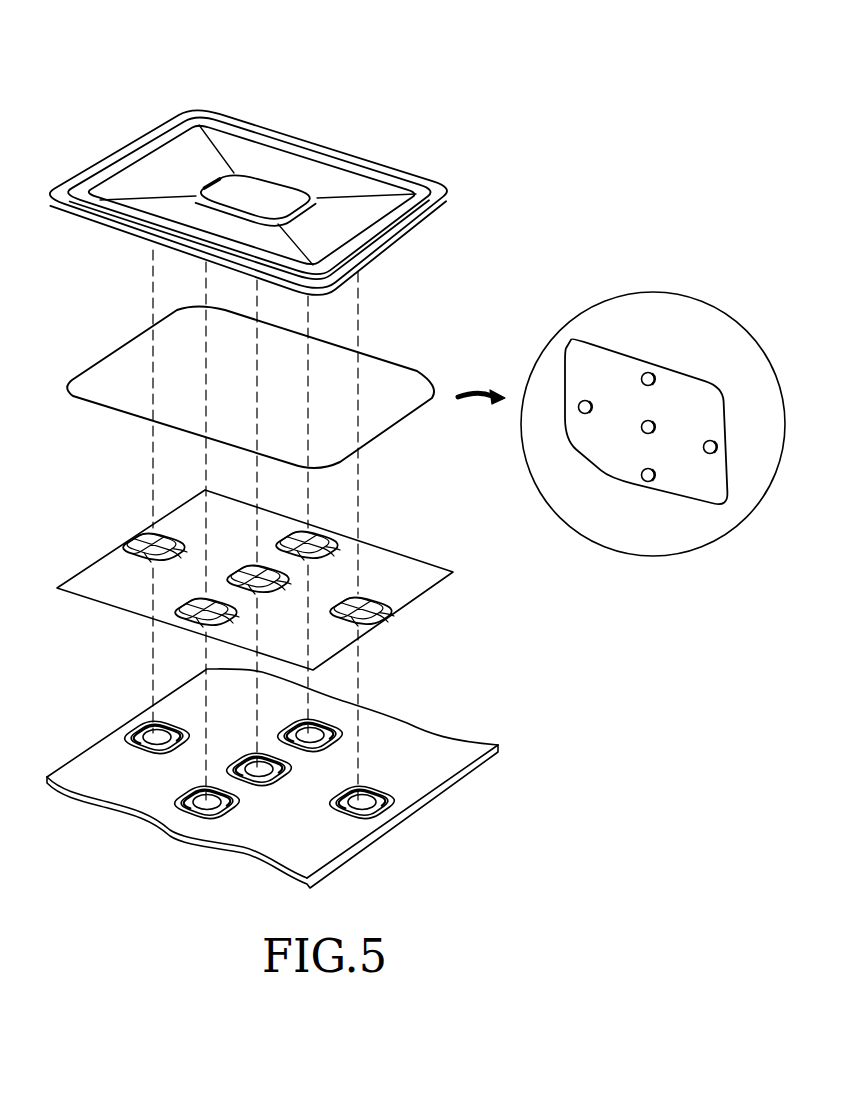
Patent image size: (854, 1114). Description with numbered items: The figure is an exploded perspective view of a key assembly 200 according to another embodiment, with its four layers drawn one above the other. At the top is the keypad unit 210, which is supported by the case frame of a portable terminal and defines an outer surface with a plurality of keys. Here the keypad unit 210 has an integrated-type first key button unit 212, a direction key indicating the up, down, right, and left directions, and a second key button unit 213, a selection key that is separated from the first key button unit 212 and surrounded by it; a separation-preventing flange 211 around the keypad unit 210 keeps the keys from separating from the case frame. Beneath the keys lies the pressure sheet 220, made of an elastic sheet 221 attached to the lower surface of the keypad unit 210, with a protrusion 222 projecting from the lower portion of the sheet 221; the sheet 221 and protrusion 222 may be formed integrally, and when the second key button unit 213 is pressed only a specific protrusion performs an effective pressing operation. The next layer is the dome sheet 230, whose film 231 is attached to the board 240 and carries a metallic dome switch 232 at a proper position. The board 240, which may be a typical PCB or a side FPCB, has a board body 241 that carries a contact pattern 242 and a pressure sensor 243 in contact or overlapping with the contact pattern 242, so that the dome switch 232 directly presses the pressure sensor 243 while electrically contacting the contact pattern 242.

The key assembly 200 is at (90, 77).
The keypad unit 210 is at (440, 152).
The separation-preventing flange 211 is at (447, 202).
The first key button unit 212 is at (183, 135).
The second key button unit 213 is at (240, 180).
The pressure sheet 220 is at (453, 352).
The sheet 221 is at (377, 363).
The protrusion 222 is at (648, 372).
The dome sheet 230 is at (425, 520).
The film 231 is at (432, 578).
The dome switch 232 is at (310, 540).
The board 240 is at (453, 703).
The board body 241 is at (415, 788).
The contact pattern 242 is at (240, 808).
The pressure sensor 243 is at (185, 803).